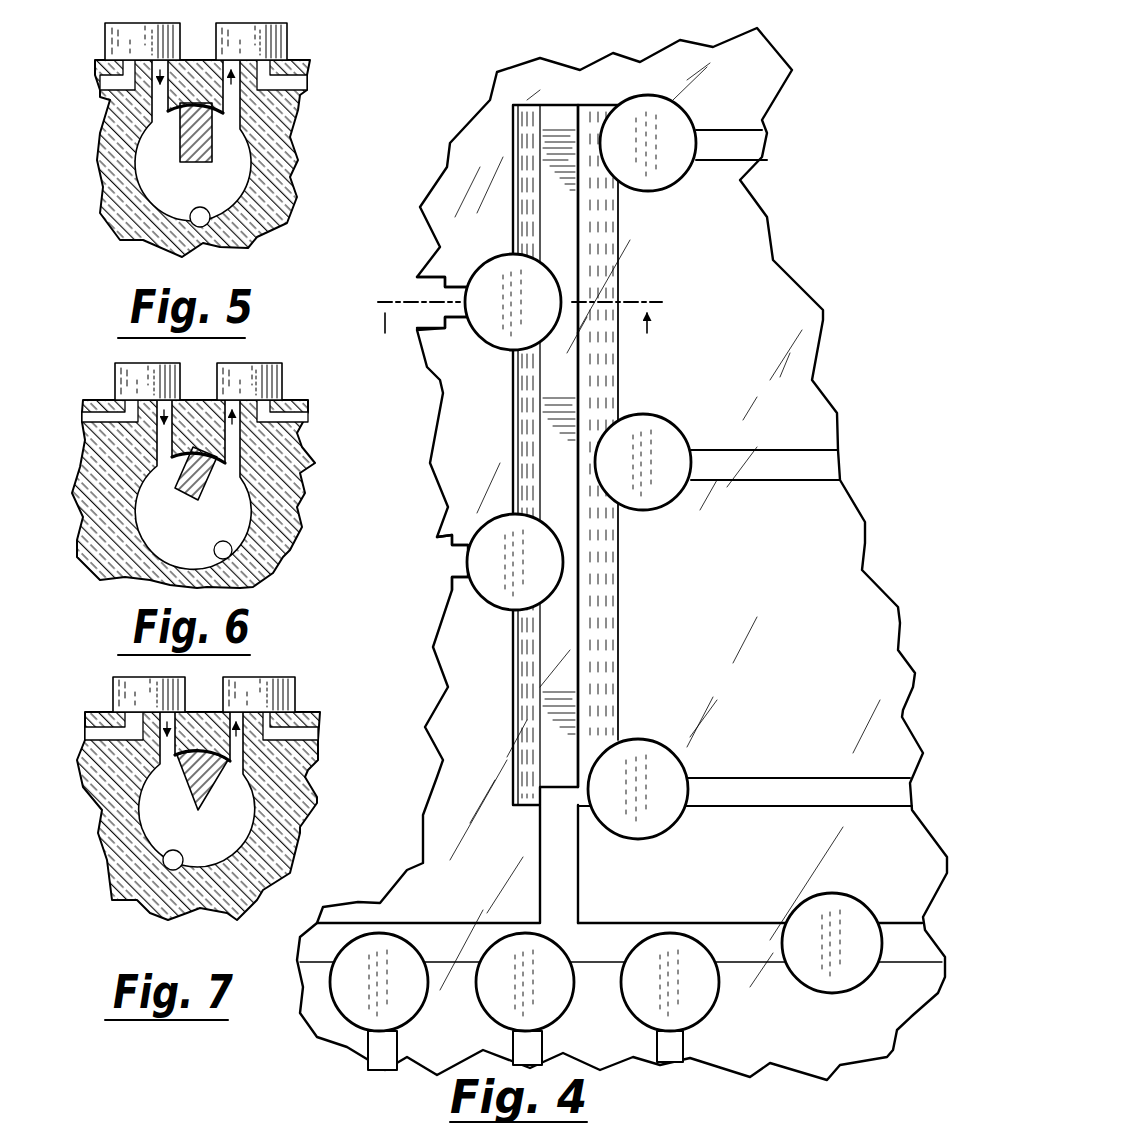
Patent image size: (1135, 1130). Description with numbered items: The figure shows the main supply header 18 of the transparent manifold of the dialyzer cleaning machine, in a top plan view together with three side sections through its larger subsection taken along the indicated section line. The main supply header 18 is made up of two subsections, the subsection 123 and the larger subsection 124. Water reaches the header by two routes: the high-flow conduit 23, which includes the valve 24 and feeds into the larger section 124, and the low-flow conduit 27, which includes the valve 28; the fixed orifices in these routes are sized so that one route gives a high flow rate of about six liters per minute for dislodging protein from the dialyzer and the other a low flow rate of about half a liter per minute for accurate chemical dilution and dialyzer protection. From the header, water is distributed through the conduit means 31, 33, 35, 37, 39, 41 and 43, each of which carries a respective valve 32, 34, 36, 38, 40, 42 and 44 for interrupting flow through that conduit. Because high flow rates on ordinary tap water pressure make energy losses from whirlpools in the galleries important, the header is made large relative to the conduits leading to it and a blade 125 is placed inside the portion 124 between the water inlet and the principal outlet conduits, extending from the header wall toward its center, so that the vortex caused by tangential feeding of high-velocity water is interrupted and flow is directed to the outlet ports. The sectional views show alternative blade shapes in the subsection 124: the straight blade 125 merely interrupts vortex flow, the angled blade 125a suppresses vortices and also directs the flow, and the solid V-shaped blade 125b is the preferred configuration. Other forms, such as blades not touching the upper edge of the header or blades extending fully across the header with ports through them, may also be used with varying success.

In FIG. 5, the main supply header 18 is at (138, 205).
In FIG. 6, the main supply header 18 is at (180, 505).
In FIG. 7, the main supply header 18 is at (185, 816).
In FIG. 4, the main supply header 18 is at (625, 360).
In FIG. 5, the conduit 23 is at (123, 100).
In FIG. 6, the conduit 23 is at (93, 427).
In FIG. 7, the conduit 23 is at (92, 748).
In FIG. 4, the conduit 23 is at (437, 277).
In FIG. 5, the valve 24 is at (105, 38).
In FIG. 6, the valve 24 is at (112, 376).
In FIG. 7, the valve 24 is at (121, 689).
In FIG. 4, the valve 24 is at (497, 258).
In FIG. 4, the conduit 27 is at (450, 590).
In FIG. 4, the valve 28 is at (500, 611).
In FIG. 4, the conduit means 31 is at (770, 450).
In FIG. 4, the valve 32 is at (656, 416).
In FIG. 4, the conduit means 33 is at (912, 965).
In FIG. 4, the valve 34 is at (869, 908).
In FIG. 5, the conduit means 35 is at (292, 112).
In FIG. 6, the conduit means 35 is at (310, 424).
In FIG. 7, the conduit means 35 is at (313, 743).
In FIG. 4, the conduit means 35 is at (715, 130).
In FIG. 5, the valve 36 is at (290, 40).
In FIG. 6, the valve 36 is at (282, 375).
In FIG. 7, the valve 36 is at (286, 688).
In FIG. 4, the valve 36 is at (652, 96).
In FIG. 4, the conduit means 37 is at (773, 778).
In FIG. 4, the valve 38 is at (642, 739).
In FIG. 4, the conduit means 39 is at (684, 1050).
In FIG. 4, the valve 40 is at (719, 1000).
In FIG. 4, the conduit means 41 is at (543, 1048).
In FIG. 4, the valve 42 is at (573, 983).
In FIG. 4, the conduit means 43 is at (398, 1047).
In FIG. 4, the valve 44 is at (429, 1011).
In FIG. 4, the subsection 123 is at (608, 923).
In FIG. 5, the subsection 124 is at (205, 224).
In FIG. 6, the subsection 124 is at (275, 569).
In FIG. 7, the subsection 124 is at (148, 901).
In FIG. 4, the subsection 124 is at (620, 597).
In FIG. 5, the blade 125 is at (213, 150).
In FIG. 4, the blade 125 is at (582, 215).
In FIG. 6, the angled blade 125a is at (280, 473).
In FIG. 7, the solid V-shaped blade 125b is at (277, 797).